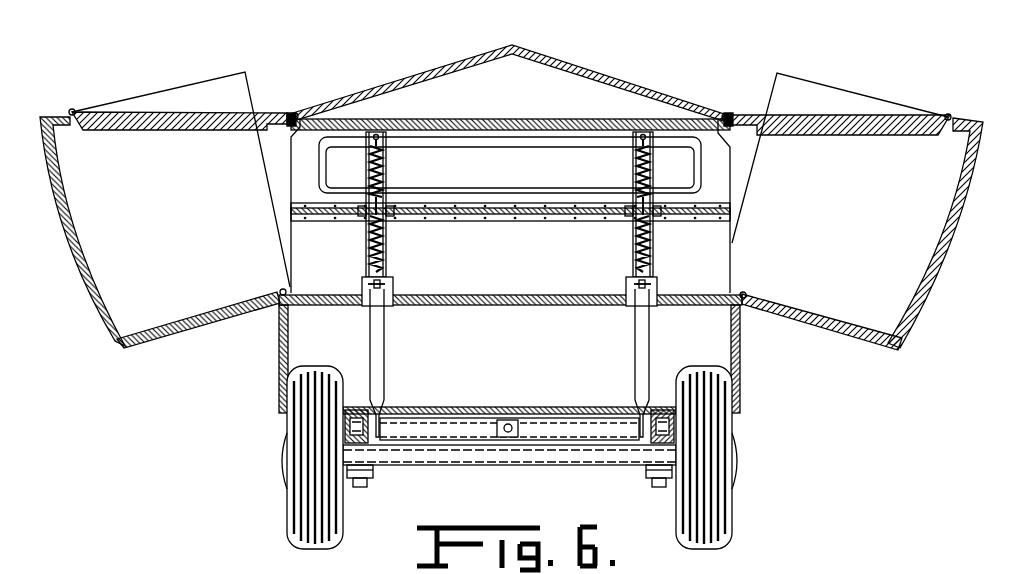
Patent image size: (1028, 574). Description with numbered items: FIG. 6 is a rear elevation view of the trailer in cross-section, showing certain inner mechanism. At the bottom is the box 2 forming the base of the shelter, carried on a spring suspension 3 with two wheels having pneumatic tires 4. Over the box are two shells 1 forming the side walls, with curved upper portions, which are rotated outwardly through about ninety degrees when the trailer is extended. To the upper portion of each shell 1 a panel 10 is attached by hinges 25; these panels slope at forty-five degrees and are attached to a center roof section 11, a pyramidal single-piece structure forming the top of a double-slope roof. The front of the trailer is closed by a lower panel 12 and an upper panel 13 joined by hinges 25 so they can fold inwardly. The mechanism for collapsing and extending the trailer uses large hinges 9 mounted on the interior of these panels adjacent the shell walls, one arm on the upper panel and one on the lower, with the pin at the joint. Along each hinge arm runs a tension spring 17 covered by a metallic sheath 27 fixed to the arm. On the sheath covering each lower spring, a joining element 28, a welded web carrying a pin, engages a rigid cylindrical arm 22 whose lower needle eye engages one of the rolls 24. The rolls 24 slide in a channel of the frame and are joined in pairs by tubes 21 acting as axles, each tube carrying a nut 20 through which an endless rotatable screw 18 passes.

The shells 1 is at (64, 254).
The box 2 is at (278, 348).
The spring suspension 3 is at (364, 486).
The pneumatic tires 4 is at (302, 503).
The large hinges 9 is at (366, 209).
The panel 10 is at (177, 111).
The center roof section 11 is at (553, 58).
The lower panel 12 is at (732, 258).
The upper panel 13 is at (302, 167).
The tension spring 17 is at (386, 160).
The endless rotatable screw 18 is at (510, 421).
The nut 20 is at (501, 420).
The tubes 21 is at (585, 421).
The rigid cylindrical arm 22 is at (385, 356).
The rolls 24 is at (373, 434).
The hinges 25 is at (72, 109).
The metallic sheath 27 is at (393, 291).
The joining element 28 is at (365, 284).